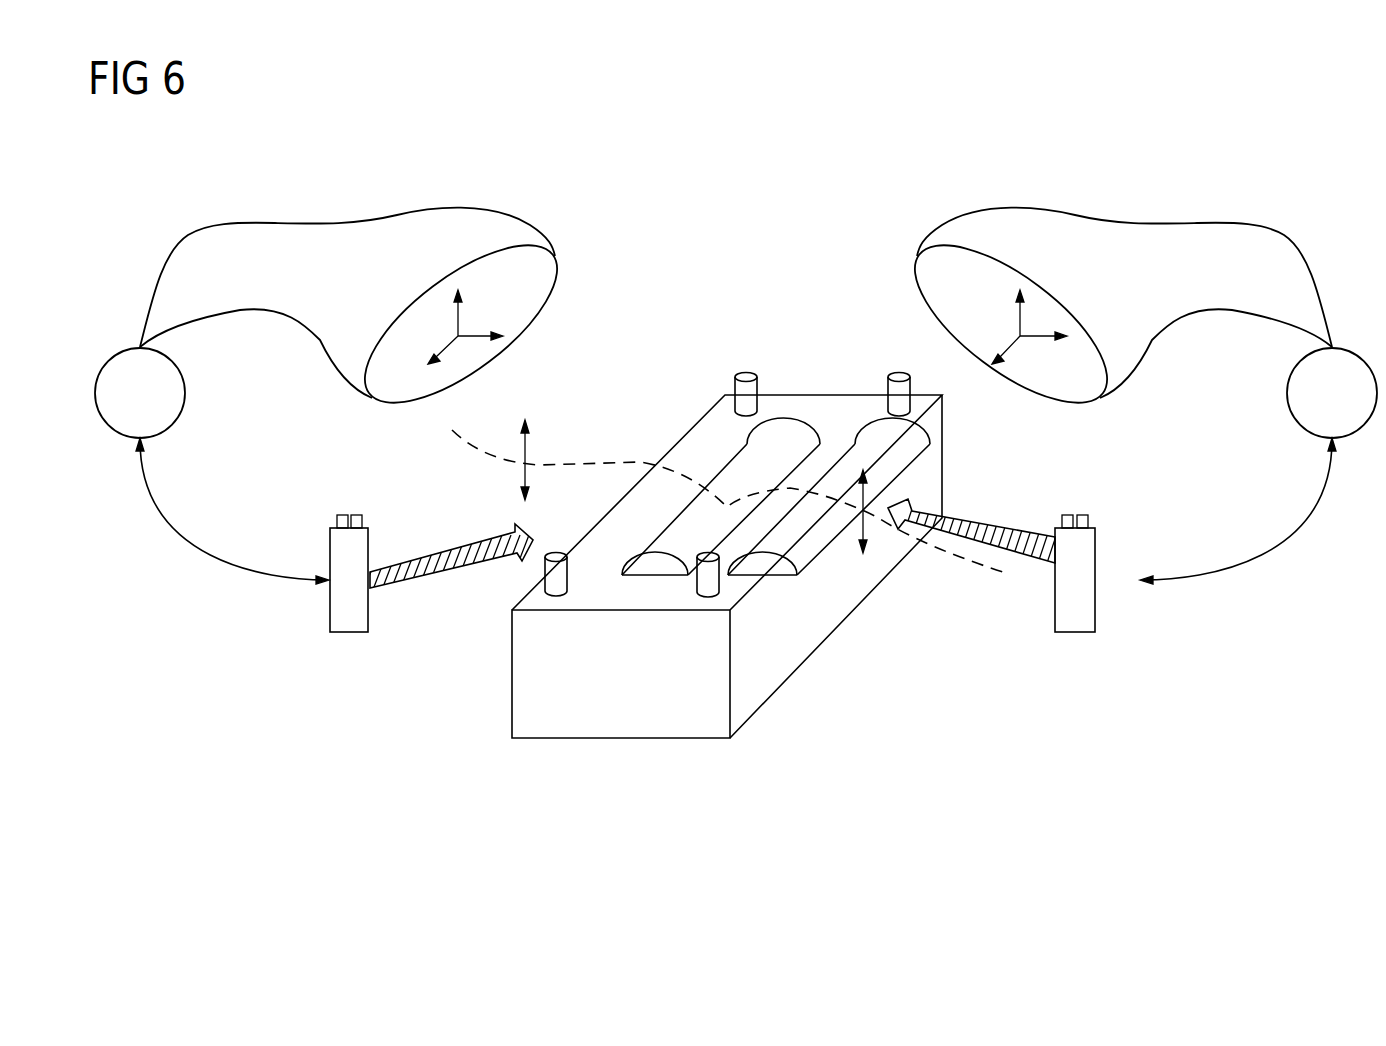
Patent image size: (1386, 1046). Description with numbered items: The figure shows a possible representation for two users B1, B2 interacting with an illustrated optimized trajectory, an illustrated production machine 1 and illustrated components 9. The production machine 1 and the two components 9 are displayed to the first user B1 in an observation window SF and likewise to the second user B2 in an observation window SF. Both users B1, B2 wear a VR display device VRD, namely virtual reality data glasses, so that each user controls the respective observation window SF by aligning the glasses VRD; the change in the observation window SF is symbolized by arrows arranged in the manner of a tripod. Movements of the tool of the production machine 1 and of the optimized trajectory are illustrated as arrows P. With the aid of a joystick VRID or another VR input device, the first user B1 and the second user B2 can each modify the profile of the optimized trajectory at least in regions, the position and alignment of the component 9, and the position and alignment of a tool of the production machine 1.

The production machine 1 is at (612, 782).
The component 9 is at (658, 568).
The VR display device VRD is at (343, 254).
The observation window SF is at (530, 282).
The first user B1 is at (212, 466).
The second user B2 is at (1258, 466).
The joystick VRID is at (328, 524).
The arrows P is at (515, 466).